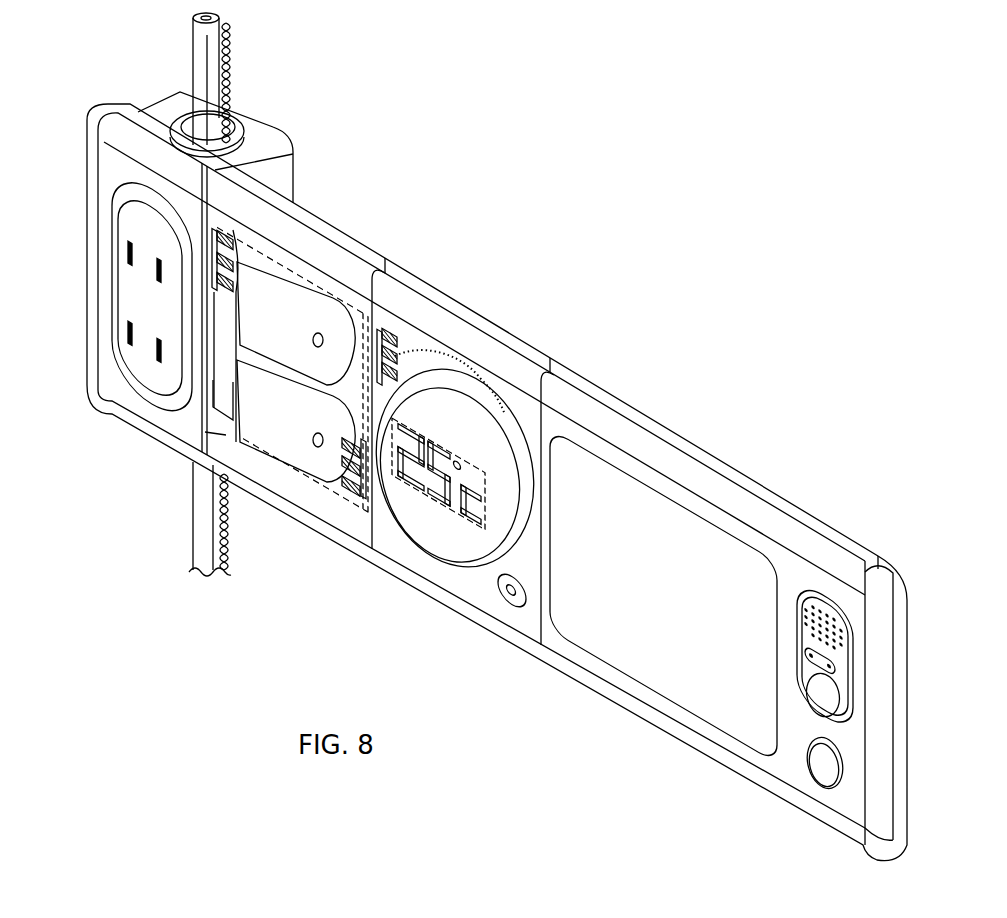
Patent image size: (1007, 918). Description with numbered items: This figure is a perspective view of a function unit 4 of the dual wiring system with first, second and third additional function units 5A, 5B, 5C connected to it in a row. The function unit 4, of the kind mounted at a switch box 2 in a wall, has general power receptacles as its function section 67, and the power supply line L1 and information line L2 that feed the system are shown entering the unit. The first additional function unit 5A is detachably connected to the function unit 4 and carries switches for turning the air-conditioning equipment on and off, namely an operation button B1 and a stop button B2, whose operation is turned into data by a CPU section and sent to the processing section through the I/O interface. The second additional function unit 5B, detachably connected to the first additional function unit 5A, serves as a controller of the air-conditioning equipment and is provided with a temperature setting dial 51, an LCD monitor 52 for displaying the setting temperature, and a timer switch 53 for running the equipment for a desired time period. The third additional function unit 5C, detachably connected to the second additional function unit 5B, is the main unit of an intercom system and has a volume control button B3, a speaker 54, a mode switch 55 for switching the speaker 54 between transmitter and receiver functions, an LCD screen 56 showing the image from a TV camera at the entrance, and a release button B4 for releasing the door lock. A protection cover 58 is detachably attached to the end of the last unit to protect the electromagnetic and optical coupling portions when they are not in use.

The switch box 2 is at (283, 175).
The function unit 4 is at (117, 181).
The first additional function unit 5A is at (312, 246).
The second additional function unit 5B is at (447, 330).
The third additional function unit 5C is at (705, 478).
The temperature setting dial 51 is at (453, 394).
The LCD monitor 52 is at (420, 483).
The timer switch 53 is at (502, 594).
The speaker 54 is at (834, 623).
The mode switch 55 is at (820, 698).
The LCD screen 56 is at (667, 623).
The protection cover 58 is at (884, 727).
The function section 67 is at (127, 295).
The operation button B1 is at (263, 314).
The stop button B2 is at (270, 408).
The volume control button B3 is at (810, 660).
The release button B4 is at (810, 767).
The power supply line L1 is at (202, 81).
The information line L2 is at (232, 97).